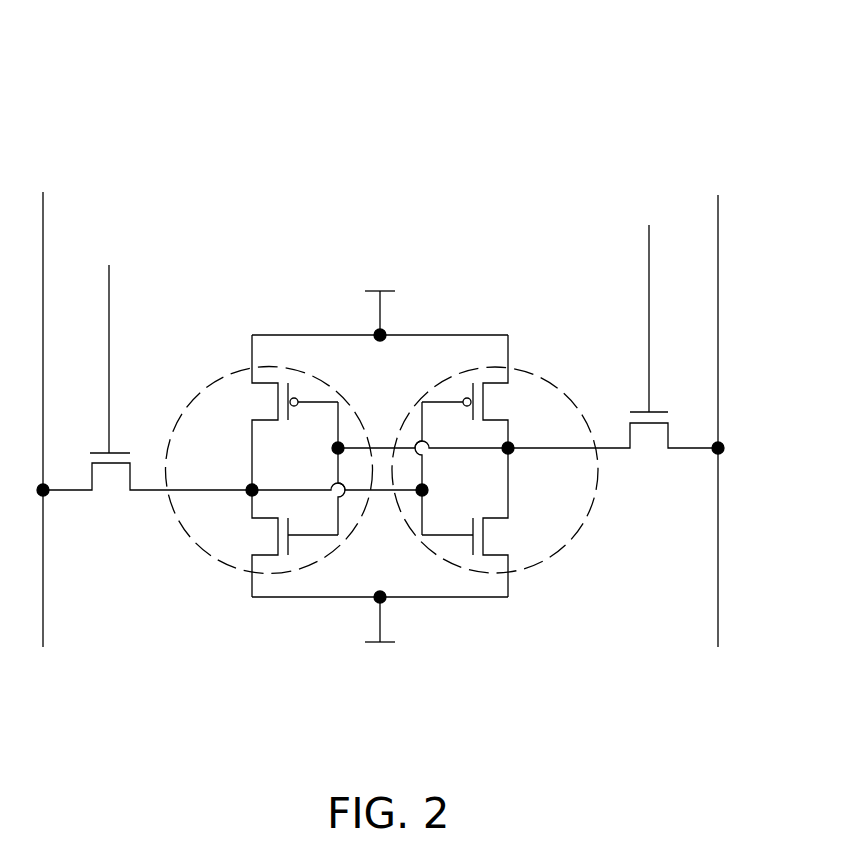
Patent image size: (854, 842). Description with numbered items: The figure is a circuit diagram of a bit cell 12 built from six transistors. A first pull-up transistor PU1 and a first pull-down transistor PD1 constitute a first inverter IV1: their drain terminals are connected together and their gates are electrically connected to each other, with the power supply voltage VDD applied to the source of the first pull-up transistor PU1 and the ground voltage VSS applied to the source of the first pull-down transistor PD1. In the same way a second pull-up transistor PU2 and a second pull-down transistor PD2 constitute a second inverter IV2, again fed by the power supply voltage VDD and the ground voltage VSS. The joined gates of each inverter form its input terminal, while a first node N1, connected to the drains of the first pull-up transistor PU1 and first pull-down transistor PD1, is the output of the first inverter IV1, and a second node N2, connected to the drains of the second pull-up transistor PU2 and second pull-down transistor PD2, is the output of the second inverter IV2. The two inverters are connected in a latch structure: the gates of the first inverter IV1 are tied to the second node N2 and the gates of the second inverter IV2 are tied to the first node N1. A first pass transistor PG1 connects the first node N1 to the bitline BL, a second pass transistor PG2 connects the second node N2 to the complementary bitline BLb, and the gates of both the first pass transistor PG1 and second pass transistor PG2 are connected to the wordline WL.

The bit cell 12 is at (641, 36).
The bitline BL is at (43, 407).
The complementary bitline BLb is at (714, 409).
The wordline WL is at (379, 327).
The first pass transistor PG1 is at (147, 488).
The second pass transistor PG2 is at (613, 448).
The first pull-up transistor PU1 is at (276, 412).
The second pull-up transistor PU2 is at (486, 391).
The first pull-down transistor PD1 is at (276, 543).
The second pull-down transistor PD2 is at (488, 522).
The first inverter IV1 is at (218, 560).
The second inverter IV2 is at (540, 565).
The first node N1 is at (318, 480).
The second node N2 is at (440, 464).
The power supply voltage VDD is at (380, 301).
The ground voltage VSS is at (380, 633).